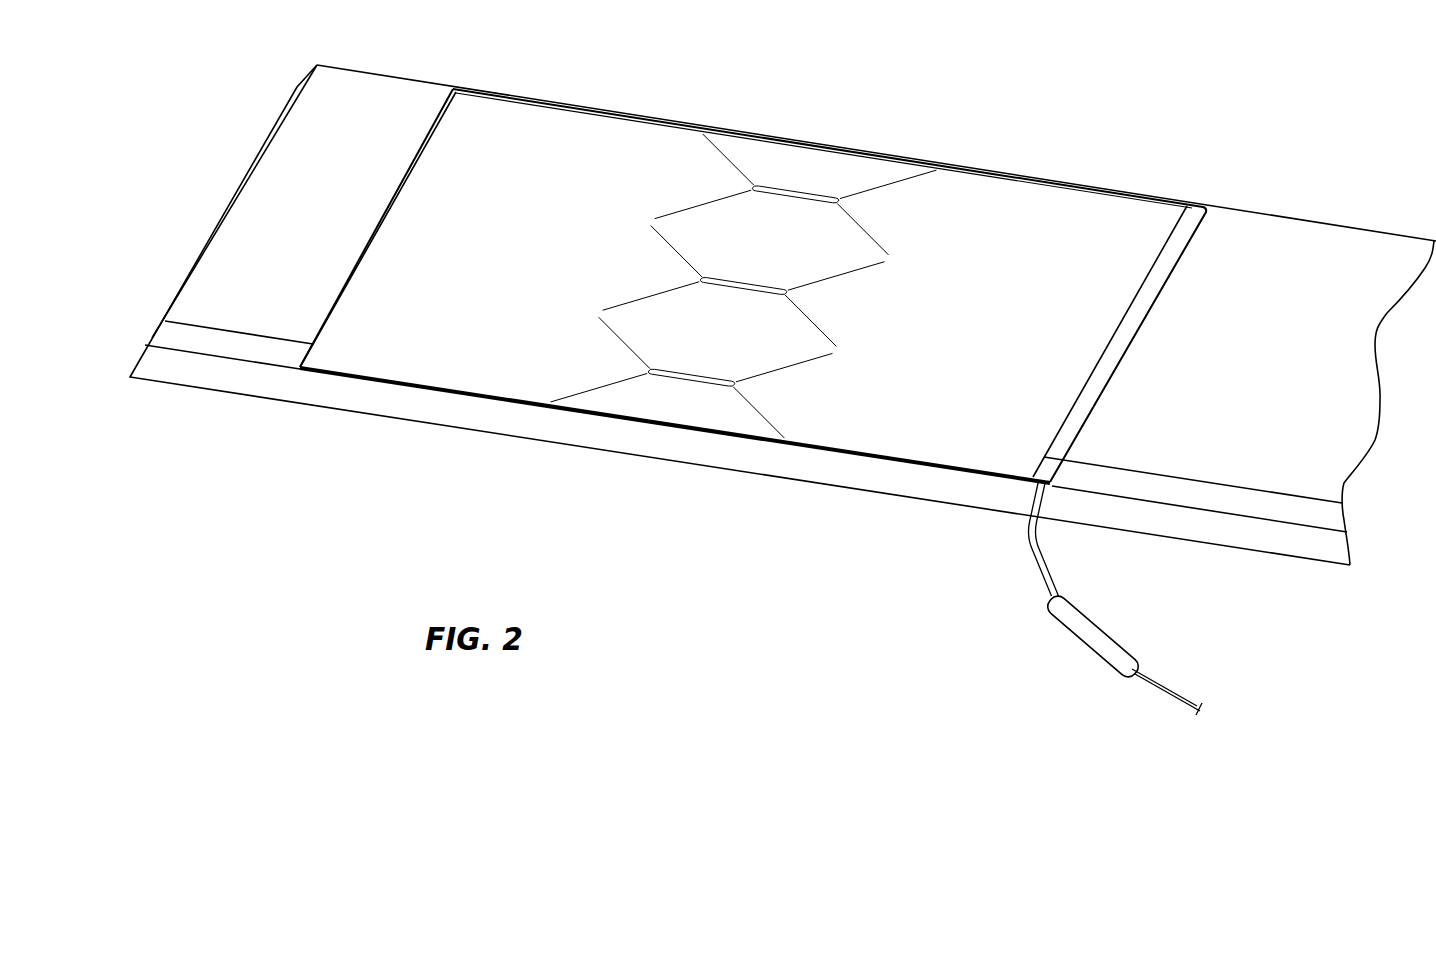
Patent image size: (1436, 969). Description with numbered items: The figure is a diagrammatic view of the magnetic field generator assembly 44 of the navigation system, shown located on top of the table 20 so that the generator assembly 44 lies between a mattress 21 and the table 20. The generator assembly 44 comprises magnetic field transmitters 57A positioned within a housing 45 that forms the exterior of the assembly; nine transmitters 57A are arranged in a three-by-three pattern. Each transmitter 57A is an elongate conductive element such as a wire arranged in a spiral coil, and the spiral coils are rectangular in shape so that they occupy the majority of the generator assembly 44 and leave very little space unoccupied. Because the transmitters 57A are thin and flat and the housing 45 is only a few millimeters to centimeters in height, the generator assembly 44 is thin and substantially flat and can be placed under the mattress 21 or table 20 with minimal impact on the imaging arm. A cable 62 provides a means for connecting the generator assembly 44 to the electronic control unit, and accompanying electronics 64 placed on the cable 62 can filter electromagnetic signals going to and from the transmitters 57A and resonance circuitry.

The table 20 is at (330, 392).
The mattress 21 is at (1287, 240).
The generator assembly 44 is at (727, 258).
The housing 45 is at (417, 156).
The transmitters 57A is at (1007, 190).
The cable 62 is at (1045, 576).
The accompanying electronics 64 is at (1088, 643).